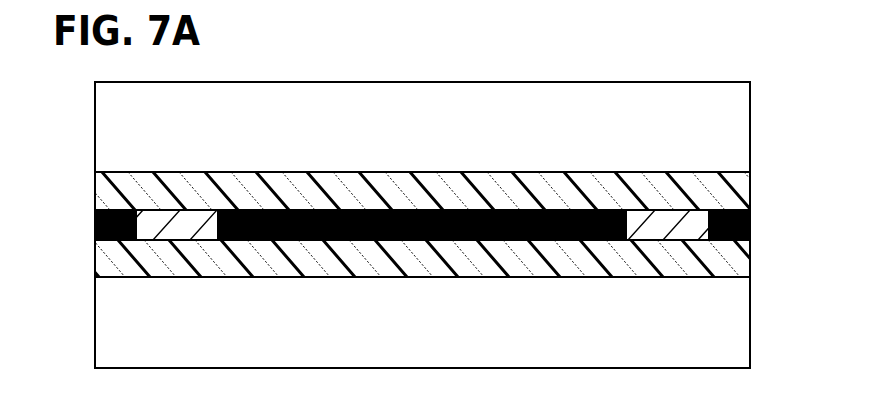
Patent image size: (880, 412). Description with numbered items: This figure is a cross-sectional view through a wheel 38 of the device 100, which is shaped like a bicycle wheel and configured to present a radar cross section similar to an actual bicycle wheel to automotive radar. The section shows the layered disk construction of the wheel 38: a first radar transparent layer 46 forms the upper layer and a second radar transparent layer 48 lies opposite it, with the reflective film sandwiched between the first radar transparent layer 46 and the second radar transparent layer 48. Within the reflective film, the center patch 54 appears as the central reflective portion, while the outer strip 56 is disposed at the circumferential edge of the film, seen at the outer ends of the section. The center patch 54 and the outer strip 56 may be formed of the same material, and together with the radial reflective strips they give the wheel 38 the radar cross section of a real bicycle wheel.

The wheel 38 is at (582, 28).
The device 100 is at (637, 14).
The first radar transparent layer 46 is at (700, 93).
The second radar transparent layer 48 is at (658, 333).
The center patch 54 is at (398, 215).
The outer strip 56 is at (273, 215).